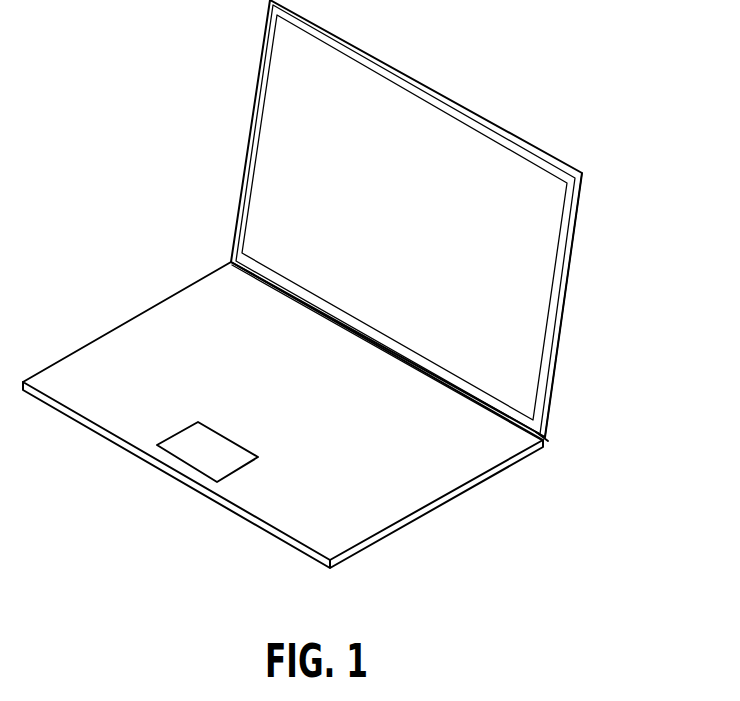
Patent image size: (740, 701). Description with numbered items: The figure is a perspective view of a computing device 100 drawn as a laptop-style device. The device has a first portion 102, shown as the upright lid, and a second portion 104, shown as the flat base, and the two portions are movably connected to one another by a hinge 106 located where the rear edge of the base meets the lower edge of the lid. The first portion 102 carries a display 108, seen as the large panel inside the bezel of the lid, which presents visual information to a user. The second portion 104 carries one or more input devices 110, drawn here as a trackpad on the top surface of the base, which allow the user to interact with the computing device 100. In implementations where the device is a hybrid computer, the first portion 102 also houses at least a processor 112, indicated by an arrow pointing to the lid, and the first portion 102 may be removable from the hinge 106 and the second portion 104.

The computing device 100 is at (446, 55).
The first portion 102 is at (575, 228).
The second portion 104 is at (451, 494).
The hinge 106 is at (547, 442).
The display 108 is at (540, 282).
The input device 110 is at (203, 462).
The processor 112 is at (592, 368).